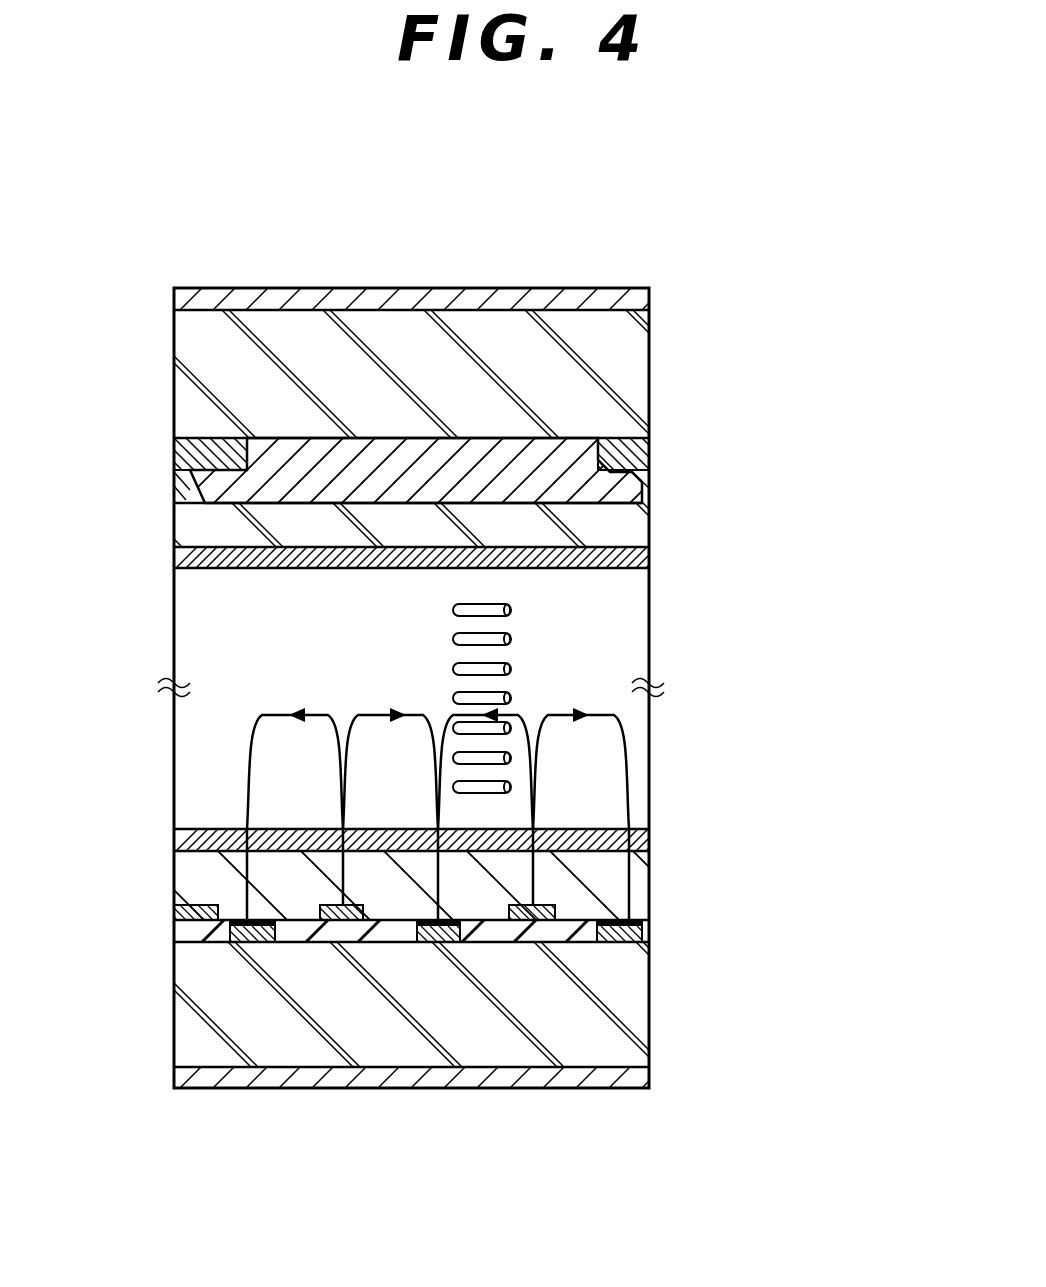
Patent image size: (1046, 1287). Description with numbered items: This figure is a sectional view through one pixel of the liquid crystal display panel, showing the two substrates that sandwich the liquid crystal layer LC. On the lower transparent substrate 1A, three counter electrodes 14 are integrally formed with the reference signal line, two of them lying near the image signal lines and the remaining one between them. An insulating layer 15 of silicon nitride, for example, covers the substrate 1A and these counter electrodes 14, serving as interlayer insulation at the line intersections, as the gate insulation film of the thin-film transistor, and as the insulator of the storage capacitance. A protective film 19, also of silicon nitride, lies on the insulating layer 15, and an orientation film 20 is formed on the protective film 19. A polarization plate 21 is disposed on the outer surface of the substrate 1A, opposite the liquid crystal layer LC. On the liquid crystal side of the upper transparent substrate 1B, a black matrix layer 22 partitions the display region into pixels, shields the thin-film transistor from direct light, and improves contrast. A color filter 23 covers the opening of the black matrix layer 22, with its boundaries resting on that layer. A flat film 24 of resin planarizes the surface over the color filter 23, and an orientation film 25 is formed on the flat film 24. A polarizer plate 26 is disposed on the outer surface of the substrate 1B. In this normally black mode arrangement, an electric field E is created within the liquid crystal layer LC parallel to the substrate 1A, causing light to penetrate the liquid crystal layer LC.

The polarizer plate 26 is at (541, 298).
The transparent substrate 1B is at (620, 348).
The color filter 23 is at (303, 443).
The black matrix layer 22 is at (635, 453).
The flat film 24 is at (203, 516).
The orientation film 25 is at (650, 556).
The liquid crystal layer LC is at (635, 628).
The electric field E is at (556, 708).
The orientation film 20 is at (650, 838).
The protective film 19 is at (640, 880).
The insulating layer 15 is at (193, 933).
The counter electrodes 14 is at (255, 945).
The transparent substrate 1A is at (792, 812).
The polarization plate 21 is at (543, 1078).